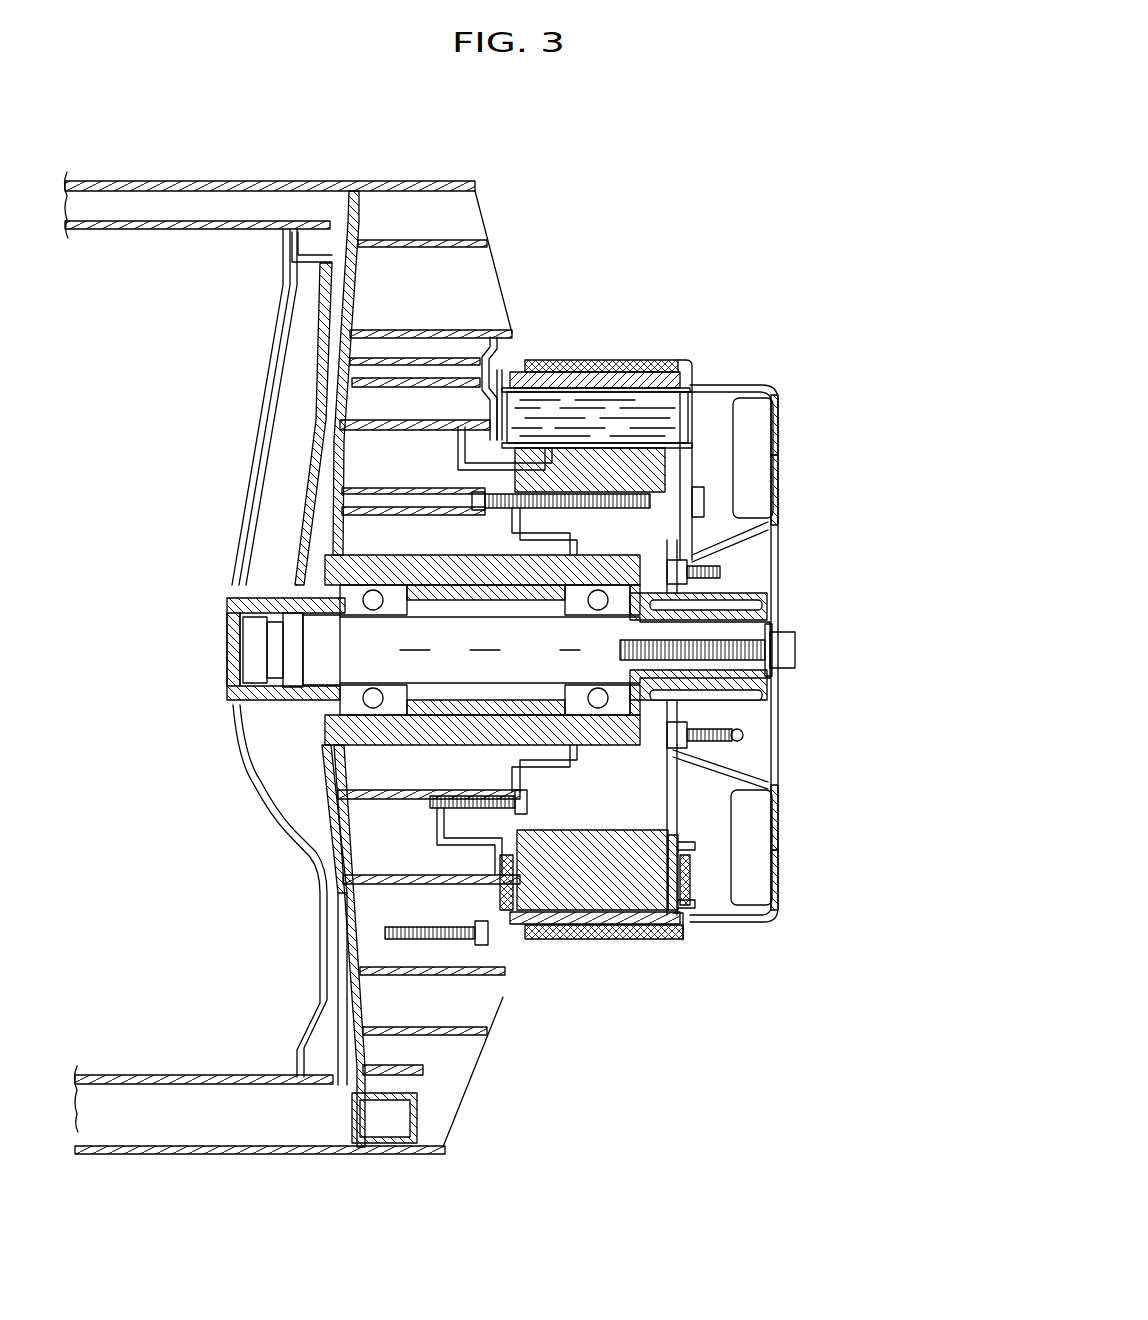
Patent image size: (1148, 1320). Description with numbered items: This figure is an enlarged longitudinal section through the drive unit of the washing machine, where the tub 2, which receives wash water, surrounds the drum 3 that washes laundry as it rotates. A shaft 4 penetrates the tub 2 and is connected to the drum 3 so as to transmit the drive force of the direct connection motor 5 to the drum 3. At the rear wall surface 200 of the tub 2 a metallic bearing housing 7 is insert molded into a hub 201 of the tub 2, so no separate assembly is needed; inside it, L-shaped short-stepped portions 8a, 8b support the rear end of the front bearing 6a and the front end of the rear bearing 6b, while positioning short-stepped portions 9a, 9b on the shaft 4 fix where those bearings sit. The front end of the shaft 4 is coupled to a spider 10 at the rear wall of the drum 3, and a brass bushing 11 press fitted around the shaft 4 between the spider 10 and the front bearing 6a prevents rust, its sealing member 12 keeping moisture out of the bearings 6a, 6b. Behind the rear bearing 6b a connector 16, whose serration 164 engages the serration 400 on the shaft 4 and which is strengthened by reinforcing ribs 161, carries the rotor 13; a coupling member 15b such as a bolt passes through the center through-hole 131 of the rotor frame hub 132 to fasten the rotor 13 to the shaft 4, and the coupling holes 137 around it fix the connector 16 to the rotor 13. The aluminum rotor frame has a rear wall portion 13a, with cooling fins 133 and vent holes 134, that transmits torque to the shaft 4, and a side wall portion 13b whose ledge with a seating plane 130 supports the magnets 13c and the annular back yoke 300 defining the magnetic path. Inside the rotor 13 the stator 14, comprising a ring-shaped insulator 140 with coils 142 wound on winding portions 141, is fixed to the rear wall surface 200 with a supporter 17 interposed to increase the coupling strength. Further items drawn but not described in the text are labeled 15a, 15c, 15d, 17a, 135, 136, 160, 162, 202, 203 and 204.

The tub 2 is at (210, 1155).
The drum 3 is at (194, 1076).
The shaft 4 is at (246, 660).
The motor 5 is at (689, 626).
The front bearing 6a is at (360, 560).
The rear bearing 6b is at (620, 702).
The bearing housing 7 is at (480, 578).
The short-stepped portion 8a is at (375, 592).
The short-stepped portion 8b is at (598, 592).
The positioning short-stepped portion 9a is at (390, 742).
The positioning short-stepped portion 9b is at (562, 688).
The spider 10 is at (233, 640).
The brass bushing 11 is at (300, 706).
The sealing member 12 is at (300, 586).
The rotor 13 is at (779, 416).
The rear wall portion 13a is at (772, 890).
The side wall portion 13b is at (636, 378).
The magnets 13c is at (540, 374).
The stator 14 is at (703, 403).
The stator core 15a is at (478, 500).
The coupling member 15b is at (612, 648).
The rotor bolt 15c is at (722, 572).
The stator mounting bolt 15d is at (403, 922).
The connector 16 is at (762, 692).
The supporter 17 is at (508, 956).
The stator bracket 17a is at (632, 502).
The seating plane 130 is at (688, 395).
The center through-hole 131 is at (778, 665).
The hub 132 is at (745, 600).
The cooling fins 133 is at (752, 470).
The vent holes 134 is at (773, 430).
The frame lining 135 is at (777, 505).
The frame lining 136 is at (775, 822).
The coupling holes 137 is at (740, 540).
The insulator 140 is at (700, 842).
The winding portions 141 is at (600, 390).
The coils 142 is at (652, 400).
The lower rotor bolt 160 is at (740, 738).
The reinforcing ribs 161 is at (622, 592).
The lower frame rib 162 is at (718, 757).
The serration 164 is at (768, 650).
The rear wall surface 200 is at (478, 1088).
The hub 201 is at (340, 752).
The bolt boss 202 is at (362, 490).
The flange 203 is at (470, 330).
The lower plate 204 is at (498, 982).
The back yoke 300 is at (622, 938).
The serration 400 is at (797, 647).